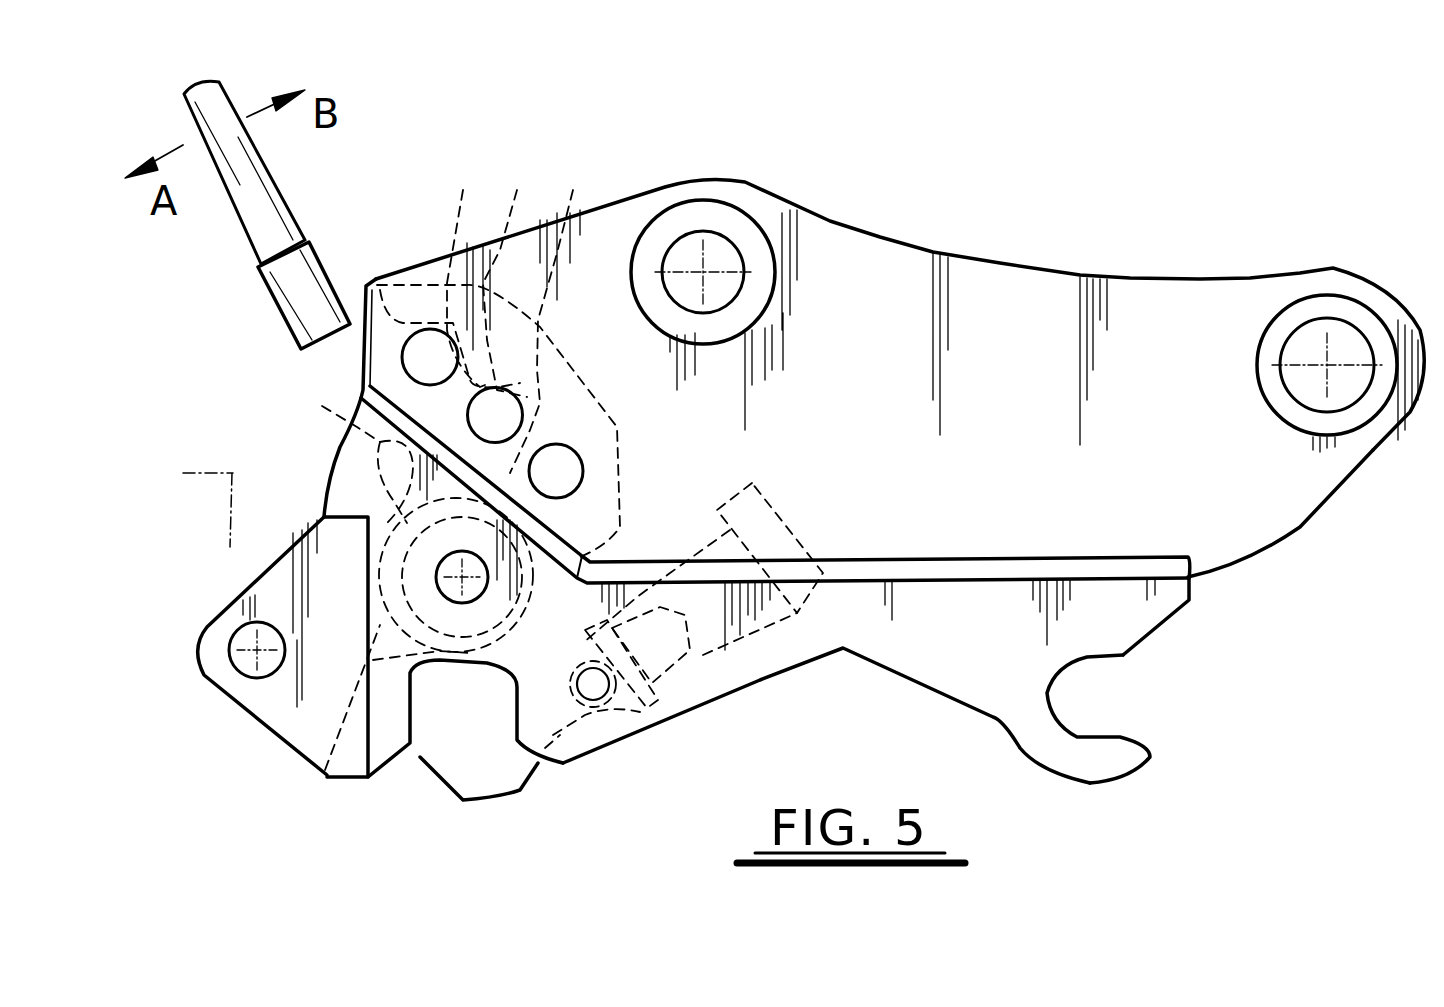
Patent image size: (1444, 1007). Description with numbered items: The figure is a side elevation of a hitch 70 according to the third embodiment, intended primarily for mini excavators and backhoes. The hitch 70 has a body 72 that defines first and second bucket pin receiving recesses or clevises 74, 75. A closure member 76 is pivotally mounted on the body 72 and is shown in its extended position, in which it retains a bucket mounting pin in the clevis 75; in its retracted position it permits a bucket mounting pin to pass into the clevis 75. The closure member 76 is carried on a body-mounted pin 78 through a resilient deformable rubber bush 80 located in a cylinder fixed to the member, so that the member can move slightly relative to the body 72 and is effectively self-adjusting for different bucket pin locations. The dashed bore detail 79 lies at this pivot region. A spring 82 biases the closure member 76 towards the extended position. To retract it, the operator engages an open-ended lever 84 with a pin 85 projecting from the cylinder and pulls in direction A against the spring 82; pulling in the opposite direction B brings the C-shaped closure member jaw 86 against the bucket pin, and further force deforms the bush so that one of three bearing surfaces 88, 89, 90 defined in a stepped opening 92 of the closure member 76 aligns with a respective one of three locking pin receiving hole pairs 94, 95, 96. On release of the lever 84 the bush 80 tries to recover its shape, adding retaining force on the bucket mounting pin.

The hitch 70 is at (1077, 266).
The body 72 is at (1302, 528).
The first bucket pin receiving clevis 74 is at (1083, 717).
The second bucket pin receiving clevis 75 is at (477, 685).
The closure member 76 is at (555, 736).
The body-mounted pin 78 is at (437, 576).
The bearing bore 79 is at (490, 610).
The rubber bush 80 is at (335, 666).
The spring 82 is at (703, 655).
The open-ended lever 84 is at (263, 168).
The pin 85 is at (349, 450).
The C-shaped closure member jaw 86 is at (488, 787).
The bearing surface 88 is at (467, 271).
The bearing surface 89 is at (509, 276).
The bearing surface 90 is at (558, 314).
The stepped opening 92 is at (373, 280).
The locking pin receiving hole pair 94 is at (418, 356).
The locking pin receiving hole pair 95 is at (507, 423).
The locking pin receiving hole pair 96 is at (530, 430).